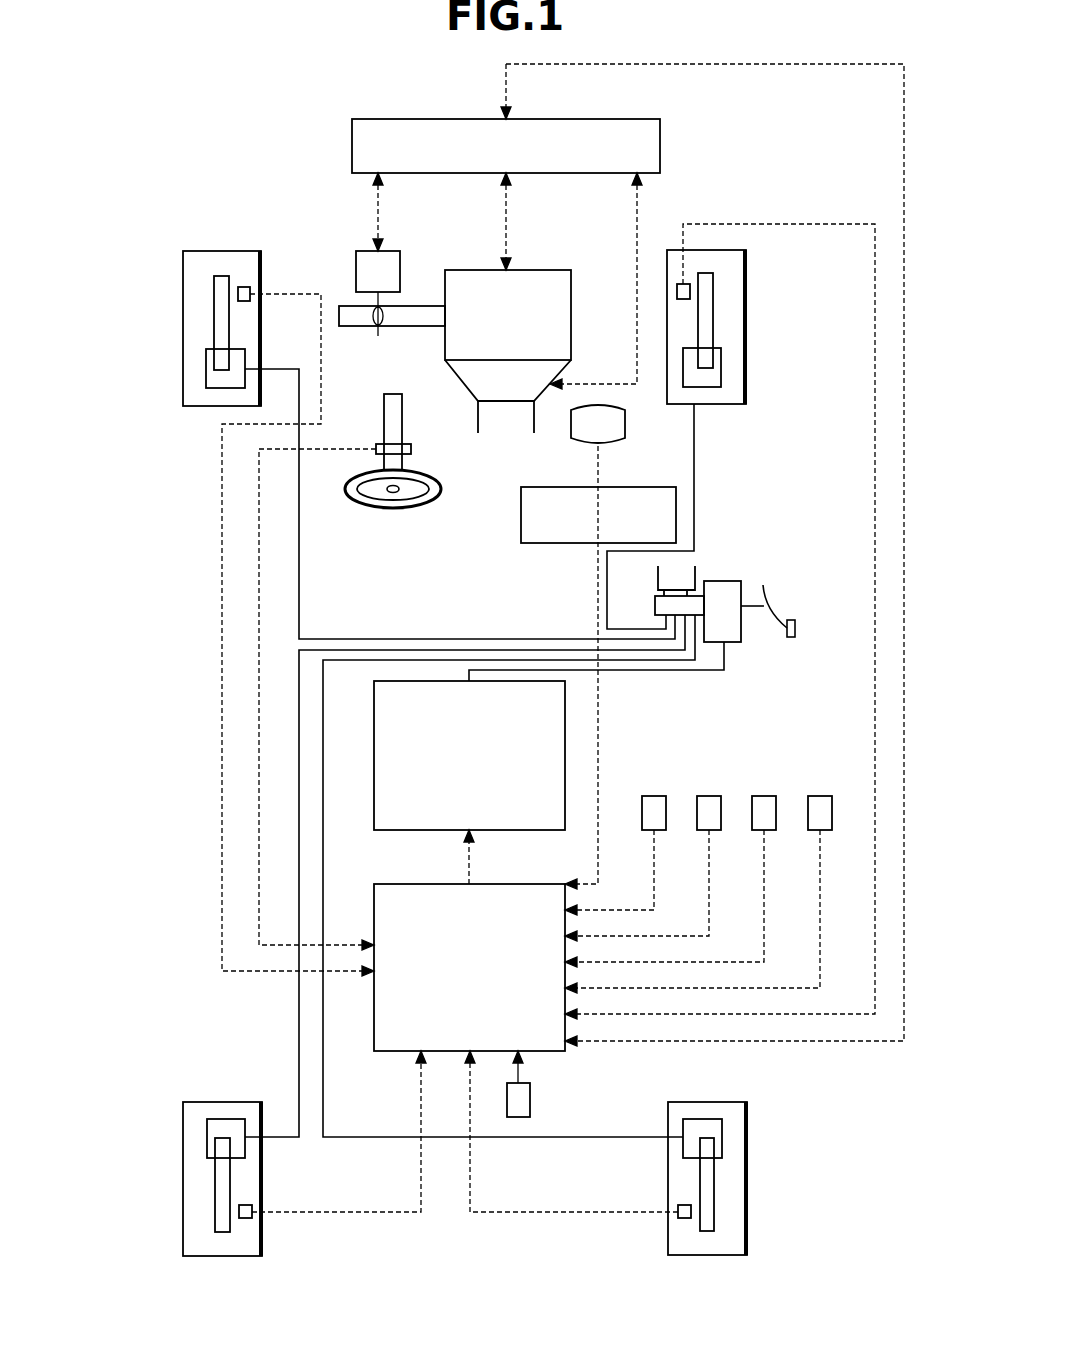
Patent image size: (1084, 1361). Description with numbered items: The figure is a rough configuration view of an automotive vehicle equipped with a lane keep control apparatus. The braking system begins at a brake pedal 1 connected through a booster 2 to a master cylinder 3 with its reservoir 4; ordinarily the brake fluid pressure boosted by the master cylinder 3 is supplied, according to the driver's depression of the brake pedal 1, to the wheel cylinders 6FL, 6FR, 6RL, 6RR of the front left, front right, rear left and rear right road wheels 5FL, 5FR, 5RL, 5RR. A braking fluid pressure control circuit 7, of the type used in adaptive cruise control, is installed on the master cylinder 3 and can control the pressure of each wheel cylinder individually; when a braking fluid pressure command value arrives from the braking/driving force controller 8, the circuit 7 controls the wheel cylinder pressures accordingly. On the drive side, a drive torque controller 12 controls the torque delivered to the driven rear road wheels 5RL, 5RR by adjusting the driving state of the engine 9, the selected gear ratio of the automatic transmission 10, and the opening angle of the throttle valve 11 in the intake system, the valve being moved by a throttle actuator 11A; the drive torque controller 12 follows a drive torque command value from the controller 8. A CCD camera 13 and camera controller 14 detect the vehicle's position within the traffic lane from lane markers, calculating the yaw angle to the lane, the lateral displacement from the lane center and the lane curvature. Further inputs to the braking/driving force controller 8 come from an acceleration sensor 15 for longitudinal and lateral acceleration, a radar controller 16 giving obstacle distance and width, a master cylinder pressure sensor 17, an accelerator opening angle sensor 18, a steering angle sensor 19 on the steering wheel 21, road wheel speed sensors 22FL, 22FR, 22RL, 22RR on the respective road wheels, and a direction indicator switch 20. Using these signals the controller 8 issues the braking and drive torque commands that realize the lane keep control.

The brake pedal 1 is at (795, 626).
The booster 2 is at (741, 634).
The master cylinder 3 is at (655, 606).
The reservoir 4 is at (658, 582).
The front left road wheel 5FL is at (183, 277).
The front right road wheel 5FR is at (746, 278).
The rear left road wheel 5RL is at (183, 1225).
The rear right road wheel 5RR is at (747, 1226).
The front left wheel cylinder 6FL is at (206, 372).
The front right wheel cylinder 6FR is at (721, 372).
The rear left wheel cylinder 6RL is at (207, 1133).
The rear right wheel cylinder 6RR is at (722, 1131).
The braking fluid pressure control circuit 7 is at (374, 750).
The braking/driving force controller 8 is at (374, 903).
The engine 9 is at (543, 269).
The automatic transmission 10 is at (457, 378).
The throttle valve 11 is at (364, 339).
The throttle actuator 11A is at (398, 251).
The drive torque controller 12 is at (661, 148).
The CCD camera 13 is at (625, 420).
The camera controller 14 is at (621, 487).
The acceleration sensor 15 is at (654, 796).
The radar controller 16 is at (709, 796).
The master cylinder pressure sensor 17 is at (764, 796).
The accelerator opening angle sensor 18 is at (820, 796).
The steering angle sensor 19 is at (411, 448).
The direction indicator switch 20 is at (530, 1098).
The steering wheel 21 is at (441, 489).
The front left road wheel speed sensor 22FL is at (241, 287).
The front right road wheel speed sensor 22FR is at (679, 284).
The rear left road wheel speed sensor 22RL is at (244, 1218).
The rear right road wheel speed sensor 22RR is at (684, 1218).